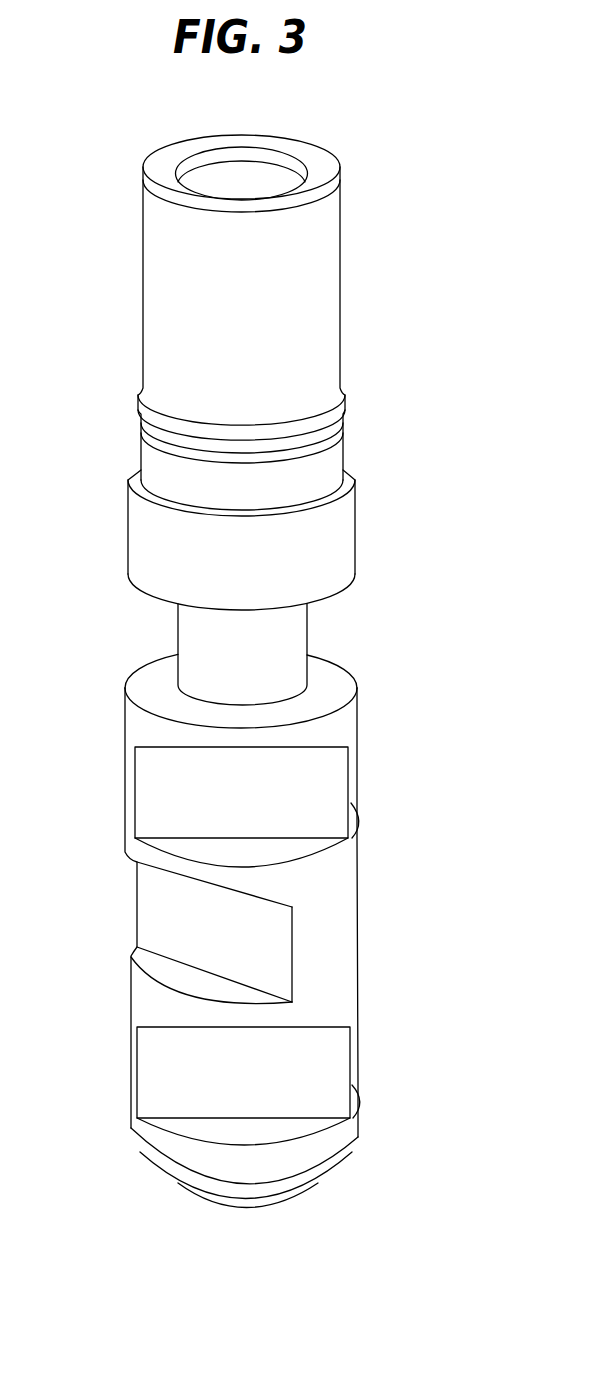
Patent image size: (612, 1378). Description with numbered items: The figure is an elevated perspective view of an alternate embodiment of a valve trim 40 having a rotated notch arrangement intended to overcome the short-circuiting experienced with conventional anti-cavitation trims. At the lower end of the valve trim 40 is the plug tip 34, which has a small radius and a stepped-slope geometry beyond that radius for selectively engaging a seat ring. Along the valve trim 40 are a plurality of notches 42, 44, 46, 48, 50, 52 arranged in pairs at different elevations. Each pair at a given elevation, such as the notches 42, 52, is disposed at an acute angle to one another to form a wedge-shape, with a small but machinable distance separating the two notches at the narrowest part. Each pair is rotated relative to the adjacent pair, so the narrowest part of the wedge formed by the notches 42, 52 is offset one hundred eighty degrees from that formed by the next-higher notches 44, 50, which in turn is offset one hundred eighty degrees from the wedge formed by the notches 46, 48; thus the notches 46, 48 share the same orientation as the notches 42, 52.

The plug tip 34 is at (332, 1185).
The valve trim 40 is at (414, 875).
The notch 42 is at (163, 1078).
The notch 44 is at (163, 923).
The notch 46 is at (162, 782).
The notch 48 is at (313, 792).
The notch 50 is at (165, 893).
The notch 52 is at (317, 1070).